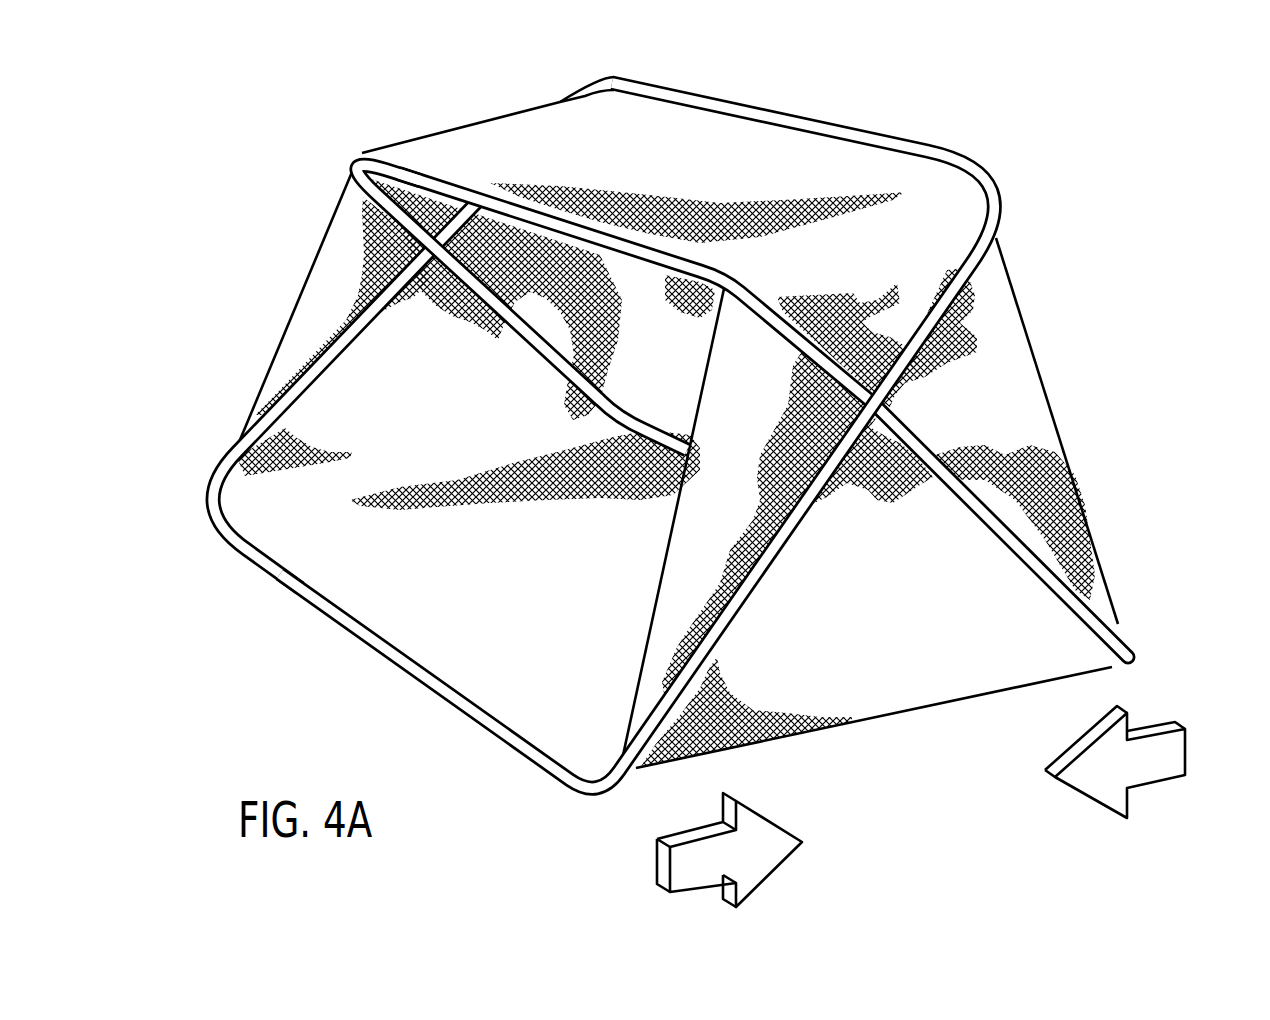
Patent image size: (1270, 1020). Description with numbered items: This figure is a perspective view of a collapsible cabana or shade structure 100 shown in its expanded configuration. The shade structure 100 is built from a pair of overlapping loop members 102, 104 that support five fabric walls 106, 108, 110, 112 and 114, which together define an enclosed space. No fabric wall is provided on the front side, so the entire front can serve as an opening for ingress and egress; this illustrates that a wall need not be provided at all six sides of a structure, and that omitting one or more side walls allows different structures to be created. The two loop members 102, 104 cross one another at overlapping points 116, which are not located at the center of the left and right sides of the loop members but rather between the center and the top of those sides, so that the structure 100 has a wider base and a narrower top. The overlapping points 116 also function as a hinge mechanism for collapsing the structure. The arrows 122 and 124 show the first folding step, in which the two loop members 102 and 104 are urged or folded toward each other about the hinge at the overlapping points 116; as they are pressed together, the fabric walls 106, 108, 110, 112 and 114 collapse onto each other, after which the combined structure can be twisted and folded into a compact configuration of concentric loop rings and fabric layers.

The shade structure 100 is at (670, 432).
The loop member 102 is at (670, 432).
The loop member 104 is at (962, 490).
The fabric wall 106 is at (902, 624).
The fabric wall 108 is at (670, 402).
The fabric wall 110 is at (455, 378).
The fabric wall 112 is at (519, 589).
The fabric wall 114 is at (685, 183).
The overlapping point 116 is at (910, 407).
The arrow 122 is at (697, 889).
The arrow 124 is at (1153, 780).